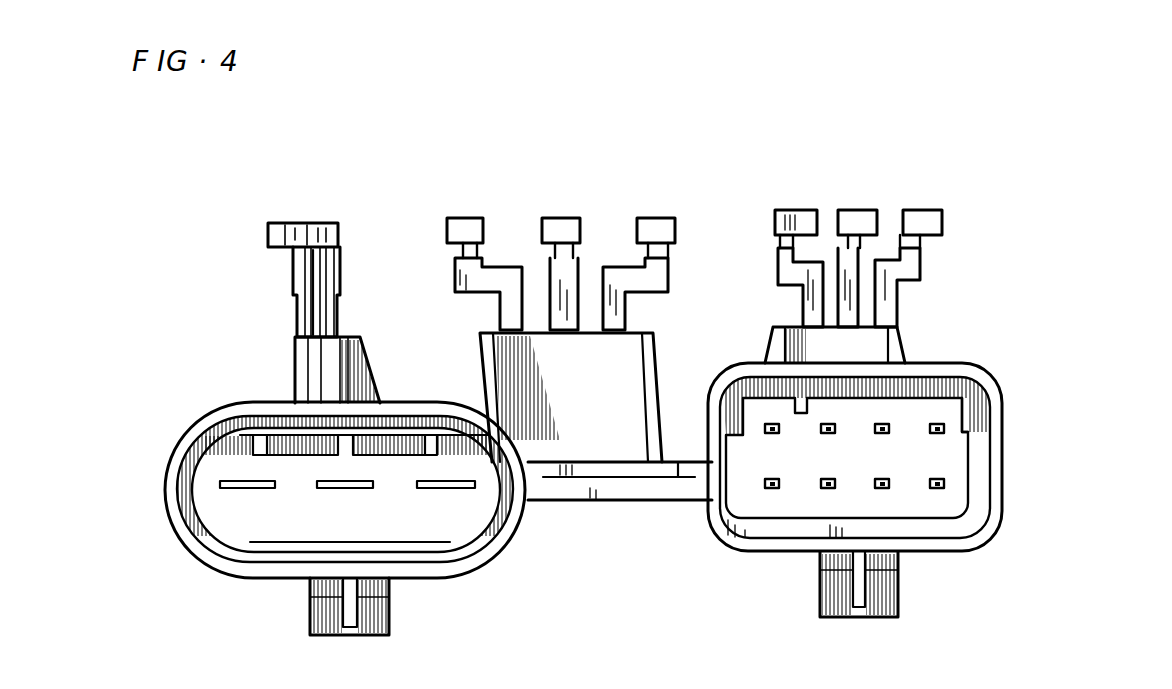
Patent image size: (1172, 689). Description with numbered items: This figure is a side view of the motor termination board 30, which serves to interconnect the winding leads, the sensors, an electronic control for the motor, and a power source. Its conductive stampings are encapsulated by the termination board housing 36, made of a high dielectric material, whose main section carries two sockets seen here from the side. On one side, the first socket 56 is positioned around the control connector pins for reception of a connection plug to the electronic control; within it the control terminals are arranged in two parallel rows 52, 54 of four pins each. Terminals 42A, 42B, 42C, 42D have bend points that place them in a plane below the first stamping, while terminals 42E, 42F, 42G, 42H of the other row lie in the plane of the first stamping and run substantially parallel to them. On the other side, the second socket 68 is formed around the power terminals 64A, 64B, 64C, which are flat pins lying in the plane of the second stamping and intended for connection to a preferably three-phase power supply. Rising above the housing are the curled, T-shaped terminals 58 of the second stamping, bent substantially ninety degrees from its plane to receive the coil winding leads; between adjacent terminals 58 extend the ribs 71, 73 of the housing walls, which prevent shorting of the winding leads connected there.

The termination board 30 is at (248, 326).
The termination board housing 36 is at (575, 508).
The row of connector pins 52 is at (990, 430).
The row of connector pins 54 is at (985, 490).
The first socket 56 is at (982, 385).
The terminals 58 is at (320, 222).
The power terminal 64A is at (240, 491).
The power terminal 64B is at (327, 490).
The power terminal 64C is at (452, 491).
The second socket 68 is at (185, 530).
The rib 71 is at (300, 364).
The rib 73 is at (313, 377).
The control terminal 42A is at (770, 489).
The control terminal 42B is at (827, 489).
The control terminal 42C is at (885, 489).
The control terminal 42D is at (942, 489).
The control terminal 42E is at (765, 425).
The control terminal 42F is at (834, 425).
The control terminal 42G is at (888, 424).
The control terminal 42H is at (970, 473).